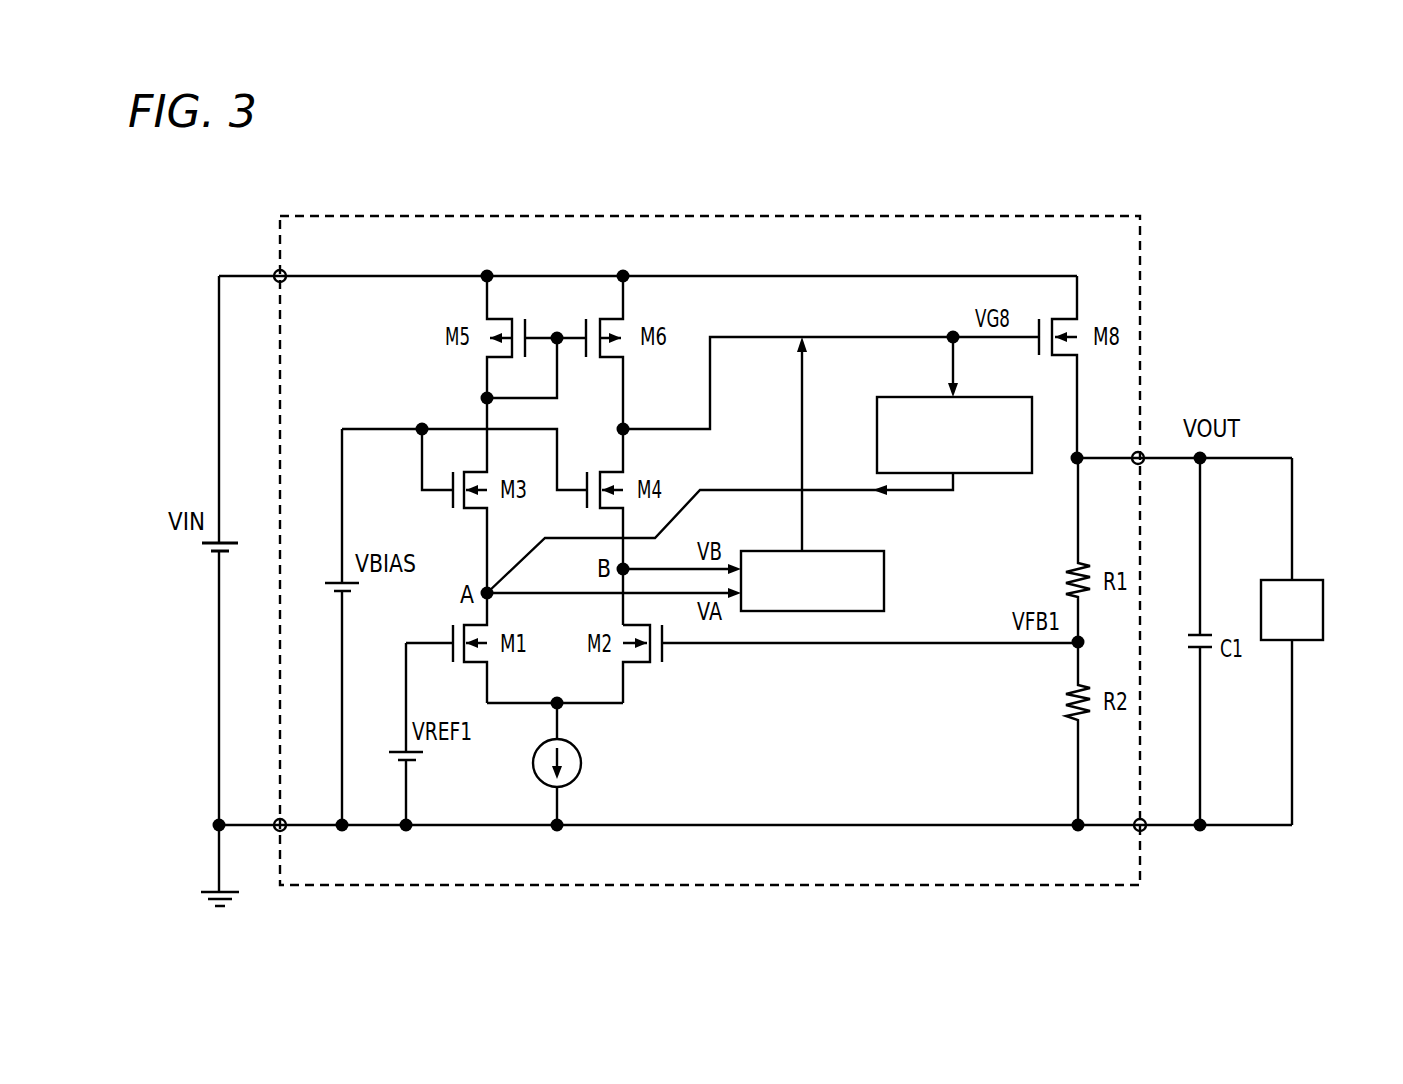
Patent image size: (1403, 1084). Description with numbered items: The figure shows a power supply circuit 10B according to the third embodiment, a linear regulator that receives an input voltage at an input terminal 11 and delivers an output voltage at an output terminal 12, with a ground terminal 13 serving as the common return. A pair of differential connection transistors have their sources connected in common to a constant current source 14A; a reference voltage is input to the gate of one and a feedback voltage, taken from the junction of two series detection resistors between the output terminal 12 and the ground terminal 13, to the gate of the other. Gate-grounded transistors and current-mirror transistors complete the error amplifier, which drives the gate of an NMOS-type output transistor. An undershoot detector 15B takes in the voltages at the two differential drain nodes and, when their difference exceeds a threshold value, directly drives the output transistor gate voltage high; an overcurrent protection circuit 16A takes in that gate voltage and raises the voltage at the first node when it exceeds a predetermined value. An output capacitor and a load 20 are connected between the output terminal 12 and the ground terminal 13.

The power supply circuit 10B is at (709, 215).
The input terminal 11 is at (275, 272).
The output terminal 12 is at (1147, 462).
The ground terminal 13 is at (275, 832).
The constant current source 14A is at (580, 772).
The undershoot detector 15B is at (884, 581).
The overcurrent protection circuit 16A is at (877, 436).
The load 20 is at (1323, 609).